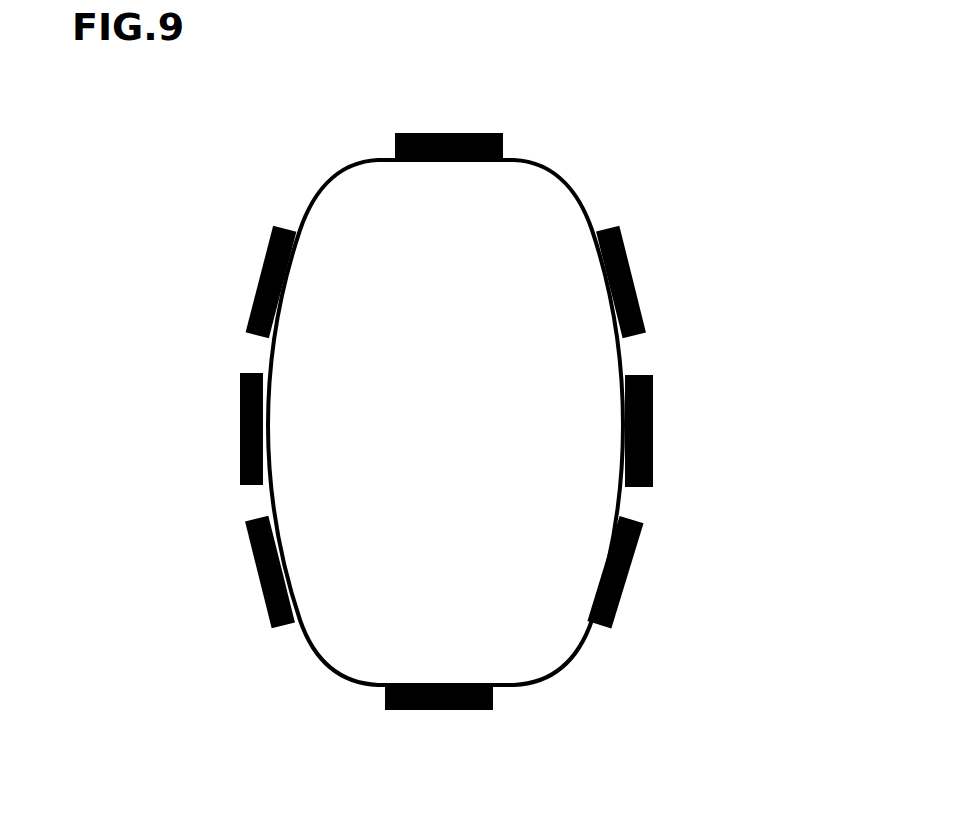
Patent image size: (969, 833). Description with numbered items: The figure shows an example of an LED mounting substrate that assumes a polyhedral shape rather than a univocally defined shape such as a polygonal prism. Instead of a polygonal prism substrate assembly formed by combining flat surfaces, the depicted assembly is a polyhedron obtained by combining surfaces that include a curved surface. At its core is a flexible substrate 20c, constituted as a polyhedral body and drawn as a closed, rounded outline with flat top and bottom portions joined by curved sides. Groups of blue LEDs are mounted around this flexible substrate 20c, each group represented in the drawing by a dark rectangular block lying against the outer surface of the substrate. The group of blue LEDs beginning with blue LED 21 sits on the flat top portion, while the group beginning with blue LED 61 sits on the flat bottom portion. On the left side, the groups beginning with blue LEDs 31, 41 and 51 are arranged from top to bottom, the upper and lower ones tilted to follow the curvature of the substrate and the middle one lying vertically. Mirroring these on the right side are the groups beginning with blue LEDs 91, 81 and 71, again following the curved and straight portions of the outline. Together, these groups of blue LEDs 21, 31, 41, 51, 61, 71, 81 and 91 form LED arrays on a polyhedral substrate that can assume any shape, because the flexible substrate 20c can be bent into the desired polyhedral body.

The flexible substrate 20c is at (568, 188).
The blue LED 21 is at (430, 133).
The blue LED 31 is at (263, 282).
The blue LED 41 is at (240, 430).
The blue LED 51 is at (263, 580).
The blue LED 61 is at (437, 710).
The blue LED 71 is at (630, 570).
The blue LED 81 is at (653, 437).
The blue LED 91 is at (633, 280).